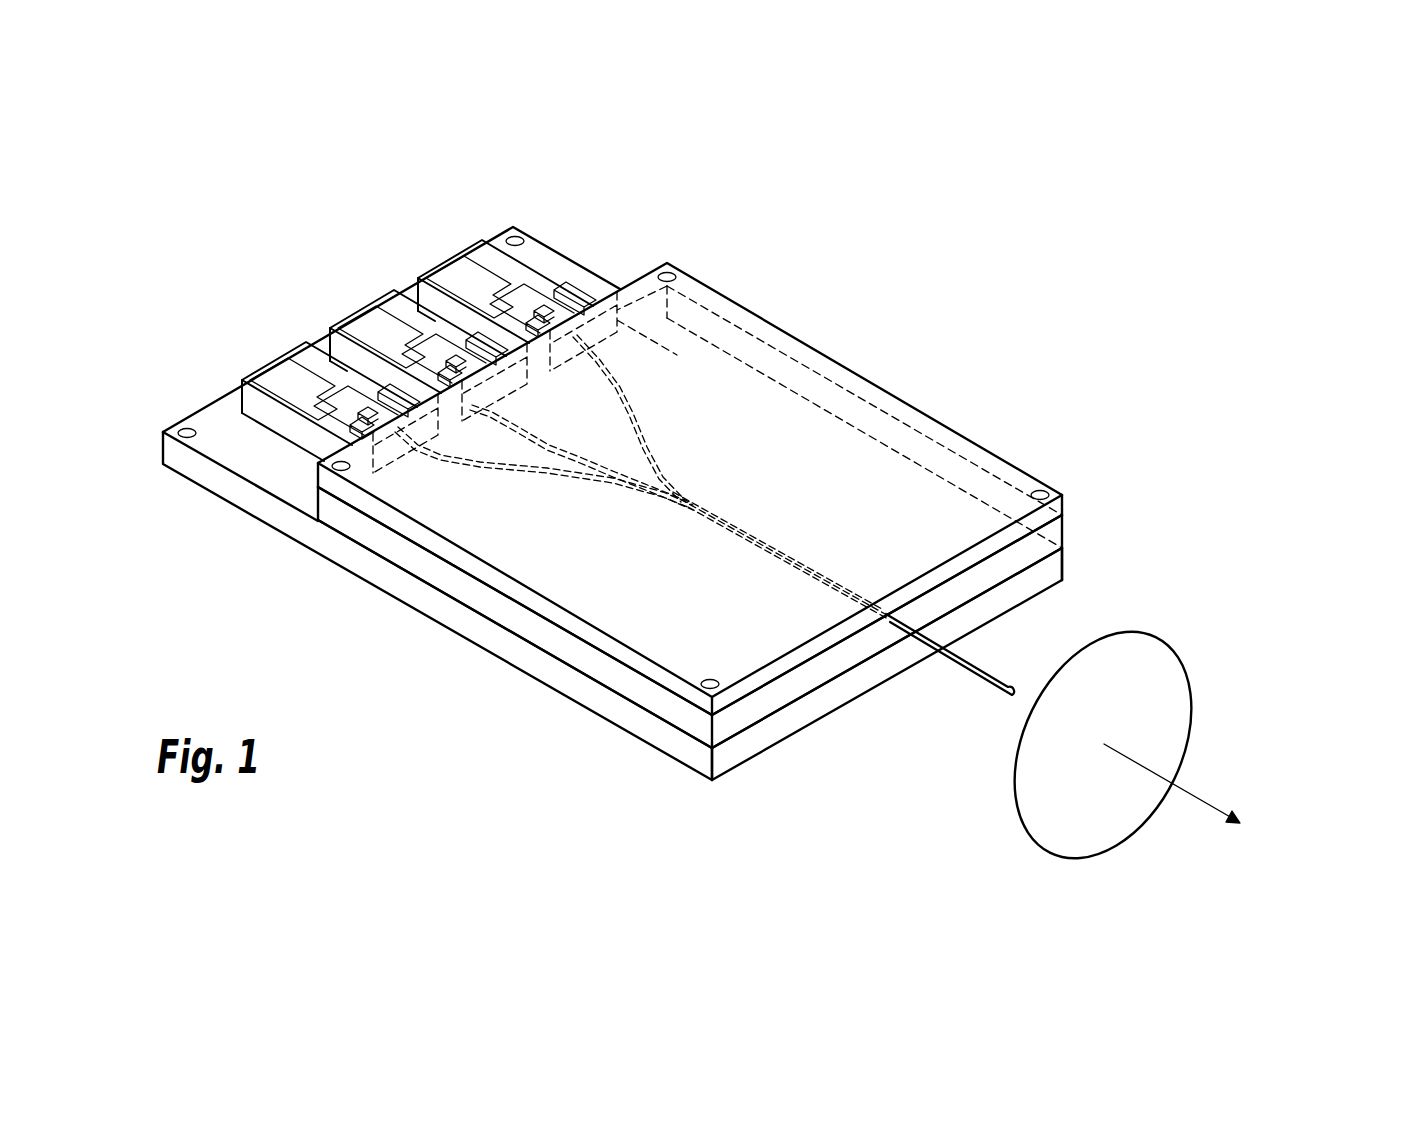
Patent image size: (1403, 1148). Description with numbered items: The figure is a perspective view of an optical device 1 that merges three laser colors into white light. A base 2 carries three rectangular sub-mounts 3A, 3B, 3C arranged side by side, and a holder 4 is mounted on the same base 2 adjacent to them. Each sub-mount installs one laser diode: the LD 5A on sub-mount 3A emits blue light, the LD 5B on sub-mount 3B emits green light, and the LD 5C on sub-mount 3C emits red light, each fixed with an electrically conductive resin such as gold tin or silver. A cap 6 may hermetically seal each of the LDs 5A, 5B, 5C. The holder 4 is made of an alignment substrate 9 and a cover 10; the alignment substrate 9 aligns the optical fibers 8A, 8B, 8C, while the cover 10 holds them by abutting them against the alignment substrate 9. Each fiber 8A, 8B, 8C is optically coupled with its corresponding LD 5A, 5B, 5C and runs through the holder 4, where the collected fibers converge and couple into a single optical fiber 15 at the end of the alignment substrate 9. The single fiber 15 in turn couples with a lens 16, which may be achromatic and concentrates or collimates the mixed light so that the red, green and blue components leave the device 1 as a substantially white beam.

The optical device 1 is at (878, 194).
The base 2 is at (426, 598).
The sub-mount 3A is at (268, 365).
The sub-mount 3B is at (357, 318).
The sub-mount 3C is at (441, 265).
The holder 4 is at (908, 400).
The LD 5A is at (350, 420).
The LD 5B is at (458, 367).
The LD 5C is at (550, 312).
The cap 6 is at (345, 415).
The optical fiber 8A is at (540, 473).
The optical fiber 8B is at (555, 435).
The optical fiber 8C is at (623, 422).
The alignment substrate 9 is at (556, 645).
The cover 10 is at (832, 368).
The single optical fiber 15 is at (975, 672).
The lens 16 is at (1140, 630).